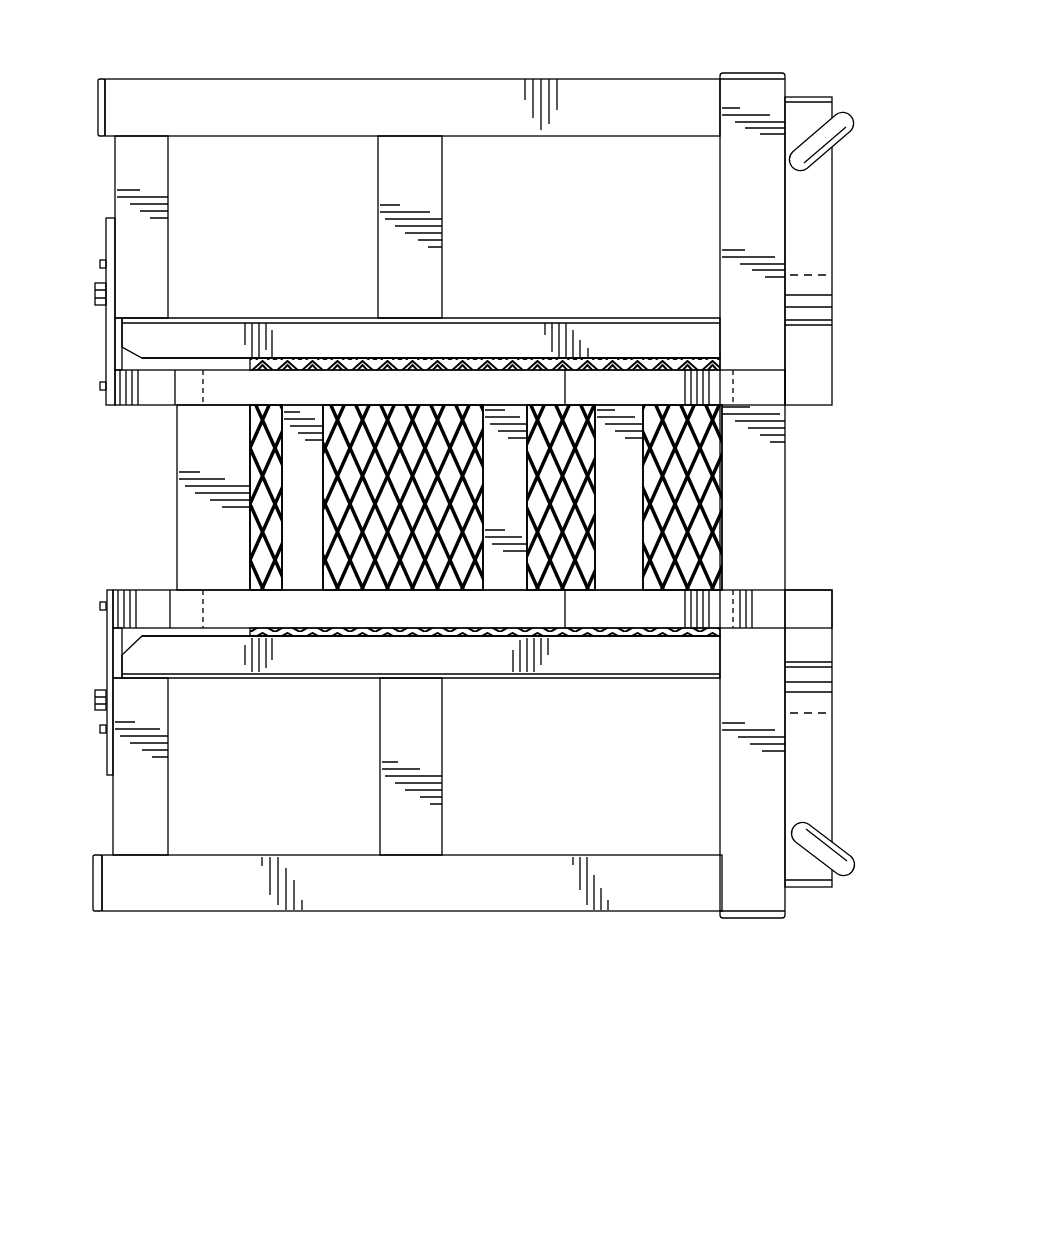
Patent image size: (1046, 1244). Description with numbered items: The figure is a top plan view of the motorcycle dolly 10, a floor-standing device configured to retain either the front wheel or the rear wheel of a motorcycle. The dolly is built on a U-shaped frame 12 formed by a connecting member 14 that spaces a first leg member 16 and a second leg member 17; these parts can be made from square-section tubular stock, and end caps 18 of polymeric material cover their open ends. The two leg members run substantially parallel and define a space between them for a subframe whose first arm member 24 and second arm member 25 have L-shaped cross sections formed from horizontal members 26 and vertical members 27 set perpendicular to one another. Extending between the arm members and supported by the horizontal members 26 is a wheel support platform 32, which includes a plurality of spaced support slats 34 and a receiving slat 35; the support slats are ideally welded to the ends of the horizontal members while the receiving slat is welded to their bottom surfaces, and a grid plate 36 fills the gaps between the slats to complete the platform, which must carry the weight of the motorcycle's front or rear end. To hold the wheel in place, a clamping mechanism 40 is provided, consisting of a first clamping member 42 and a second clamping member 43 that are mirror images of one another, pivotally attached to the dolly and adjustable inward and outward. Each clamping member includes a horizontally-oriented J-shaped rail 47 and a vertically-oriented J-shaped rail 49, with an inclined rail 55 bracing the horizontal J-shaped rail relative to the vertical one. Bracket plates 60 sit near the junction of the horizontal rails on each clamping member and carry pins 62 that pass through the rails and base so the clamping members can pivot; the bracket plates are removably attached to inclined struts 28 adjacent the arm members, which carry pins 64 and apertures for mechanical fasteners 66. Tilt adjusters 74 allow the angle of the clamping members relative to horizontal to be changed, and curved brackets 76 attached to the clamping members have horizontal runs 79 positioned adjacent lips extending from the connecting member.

The motorcycle dolly 10 is at (134, 62).
The frame 12 is at (240, 690).
The connecting member 14 is at (777, 500).
The first leg member 16 is at (335, 88).
The second leg member 17 is at (350, 903).
The end caps 18 is at (750, 72).
The first arm member 24 is at (190, 333).
The second arm member 25 is at (372, 658).
The horizontal members 26 is at (293, 340).
The vertical members 27 is at (332, 313).
The inclined struts 28 is at (128, 172).
The wheel support platform 32 is at (163, 540).
The support slats 34 is at (302, 580).
The receiving slat 35 is at (197, 517).
The grid plate 36 is at (250, 468).
The clamping mechanism 40 is at (818, 422).
The first clamping member 42 is at (772, 356).
The second clamping member 43 is at (765, 616).
The horizontally-oriented J-shaped rail 47 is at (160, 395).
The vertically-oriented J-shaped rail 49 is at (757, 397).
The inclined rail 55 is at (620, 378).
The bracket plates 60 is at (107, 337).
The pins 62 is at (100, 385).
The pins 64 is at (100, 263).
The mechanical fasteners 66 is at (95, 295).
The tilt adjusters 74 is at (855, 148).
The brackets 76 is at (820, 303).
The horizontal runs 79 is at (820, 237).